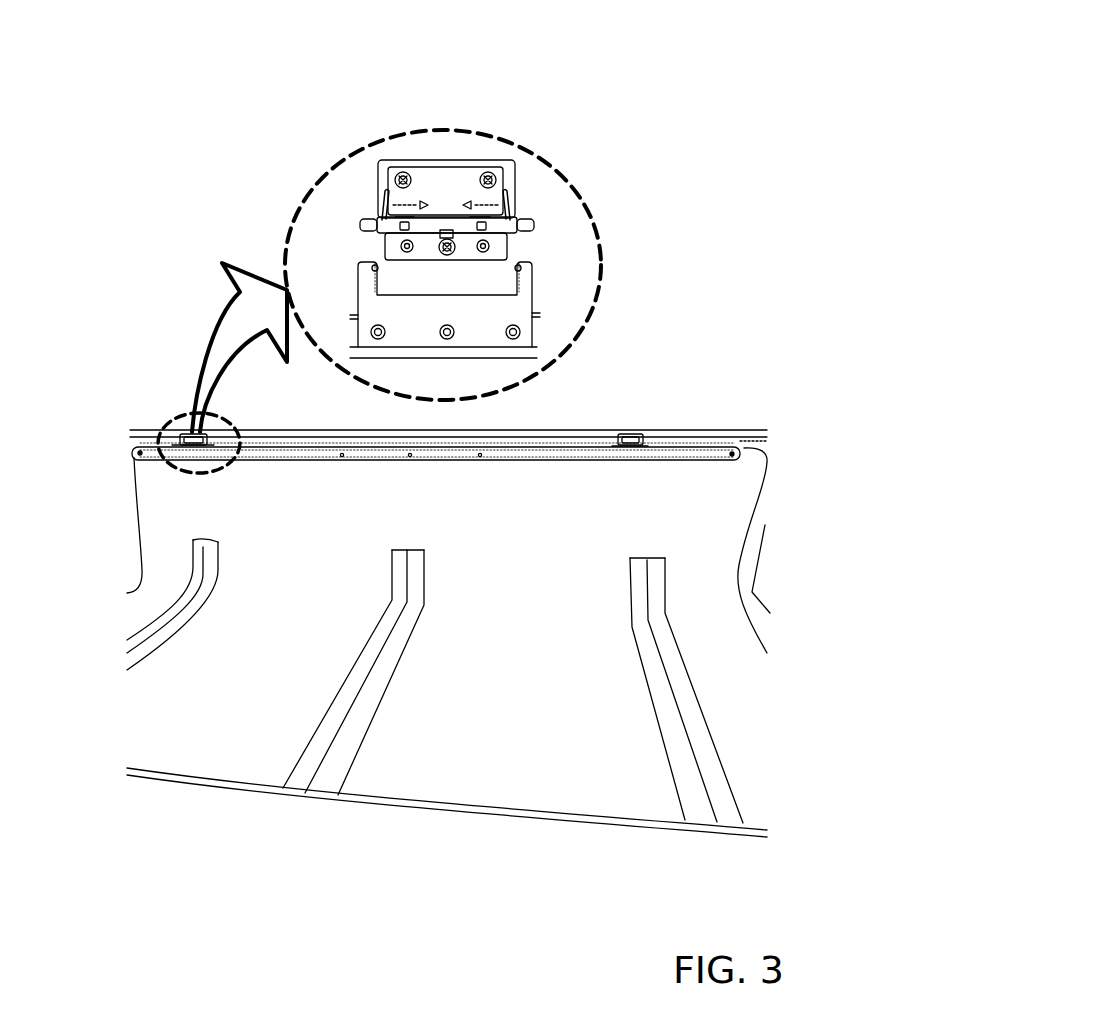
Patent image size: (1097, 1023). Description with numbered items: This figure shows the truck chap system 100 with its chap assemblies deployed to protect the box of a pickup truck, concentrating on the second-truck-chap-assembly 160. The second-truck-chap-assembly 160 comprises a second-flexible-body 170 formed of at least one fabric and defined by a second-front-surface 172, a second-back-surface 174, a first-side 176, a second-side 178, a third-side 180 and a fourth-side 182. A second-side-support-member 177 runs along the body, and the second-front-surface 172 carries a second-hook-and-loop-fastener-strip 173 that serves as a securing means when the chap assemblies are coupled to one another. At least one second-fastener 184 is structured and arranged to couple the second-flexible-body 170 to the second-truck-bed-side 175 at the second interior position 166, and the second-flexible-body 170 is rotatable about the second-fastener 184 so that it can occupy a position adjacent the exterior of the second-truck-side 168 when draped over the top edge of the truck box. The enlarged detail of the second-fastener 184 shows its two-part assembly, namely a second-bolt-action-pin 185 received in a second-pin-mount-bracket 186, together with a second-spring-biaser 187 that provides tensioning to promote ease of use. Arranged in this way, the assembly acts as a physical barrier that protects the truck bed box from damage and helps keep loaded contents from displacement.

The truck chap system 100 is at (667, 78).
The second-truck-chap-assembly 160 is at (682, 143).
The second interior position 166 is at (720, 330).
The second-truck-side 168 is at (152, 440).
The second-flexible-body 170 is at (498, 722).
The second-front-surface 172 is at (528, 767).
The second-hook-and-loop-fastener-strip 173 is at (406, 627).
The second-back-surface 174 is at (377, 808).
The second-truck-bed-side 175 is at (748, 436).
The first-side 176 is at (540, 451).
The second-side-support-member 177 is at (248, 450).
The second-side 178 is at (132, 515).
The third-side 180 is at (147, 768).
The fourth-side 182 is at (740, 600).
The second-fastener 184 is at (443, 158).
The second-bolt-action-pin 185 is at (364, 210).
The second-pin-mount-bracket 186 is at (402, 307).
The second-spring-biaser 187 is at (457, 225).